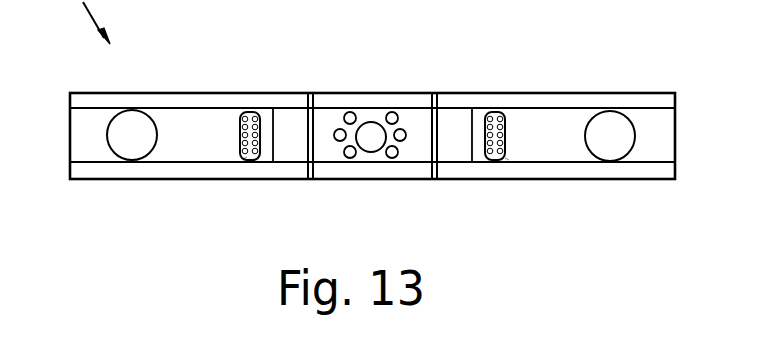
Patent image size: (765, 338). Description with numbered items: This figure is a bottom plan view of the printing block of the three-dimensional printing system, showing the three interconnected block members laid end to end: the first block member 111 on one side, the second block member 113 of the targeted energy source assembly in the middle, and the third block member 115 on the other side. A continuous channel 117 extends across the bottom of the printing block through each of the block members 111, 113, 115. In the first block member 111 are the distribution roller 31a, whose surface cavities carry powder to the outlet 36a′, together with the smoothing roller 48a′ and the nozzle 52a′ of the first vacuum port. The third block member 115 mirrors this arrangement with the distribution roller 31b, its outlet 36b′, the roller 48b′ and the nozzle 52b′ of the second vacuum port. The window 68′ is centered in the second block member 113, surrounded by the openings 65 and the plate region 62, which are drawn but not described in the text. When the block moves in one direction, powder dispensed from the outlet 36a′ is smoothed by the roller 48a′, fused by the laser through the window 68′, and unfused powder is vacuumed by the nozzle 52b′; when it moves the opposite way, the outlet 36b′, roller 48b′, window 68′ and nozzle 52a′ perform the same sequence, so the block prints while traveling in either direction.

The continuous channel 117 is at (657, 134).
The first block member 111 is at (88, 172).
The third block member 115 is at (655, 172).
The mounting plate 62 is at (413, 95).
The second block member 113 is at (434, 92).
The roller 48a′ is at (290, 114).
The roller 48b′ is at (461, 147).
The nozzle 52a′ is at (133, 110).
The nozzle 52b′ is at (612, 111).
The distribution roller 31a is at (247, 112).
The distribution roller 31b is at (496, 112).
The outlet 36a′ is at (242, 160).
The outlet 36b′ is at (510, 161).
The window 68′ is at (371, 153).
The fastener hole 65 is at (350, 112).